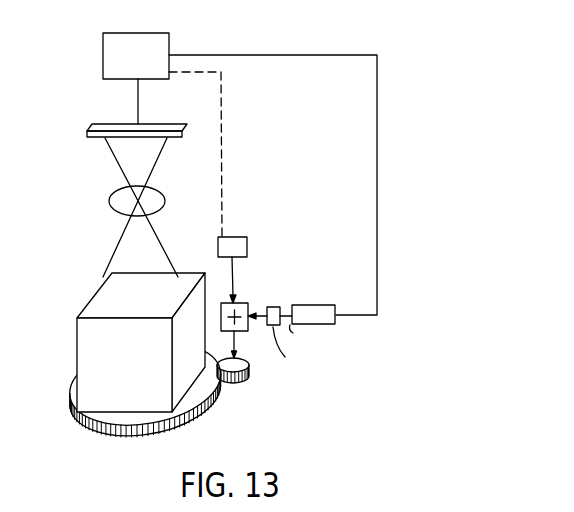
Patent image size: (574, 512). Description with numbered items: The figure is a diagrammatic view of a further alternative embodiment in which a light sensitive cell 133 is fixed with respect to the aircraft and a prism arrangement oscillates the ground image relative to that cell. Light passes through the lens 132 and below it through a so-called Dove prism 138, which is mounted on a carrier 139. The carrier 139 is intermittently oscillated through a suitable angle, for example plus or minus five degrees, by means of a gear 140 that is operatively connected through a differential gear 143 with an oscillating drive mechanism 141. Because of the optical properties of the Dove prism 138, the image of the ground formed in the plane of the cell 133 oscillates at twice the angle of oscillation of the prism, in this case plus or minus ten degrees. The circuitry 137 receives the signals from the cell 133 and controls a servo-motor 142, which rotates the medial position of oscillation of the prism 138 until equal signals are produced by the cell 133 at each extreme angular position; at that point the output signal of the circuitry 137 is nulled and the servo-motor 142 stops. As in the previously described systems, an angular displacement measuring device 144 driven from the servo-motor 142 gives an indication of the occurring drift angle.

The circuitry 137 is at (155, 37).
The light sensitive cell 133 is at (107, 140).
The lens 132 is at (163, 197).
The Dove prism 138 is at (82, 345).
The carrier 139 is at (192, 417).
The gear 140 is at (247, 377).
The oscillating drive mechanism 141 is at (238, 237).
The servo-motor 142 is at (315, 306).
The differential gear 143 is at (245, 304).
The angular displacement measuring device 144 is at (277, 307).